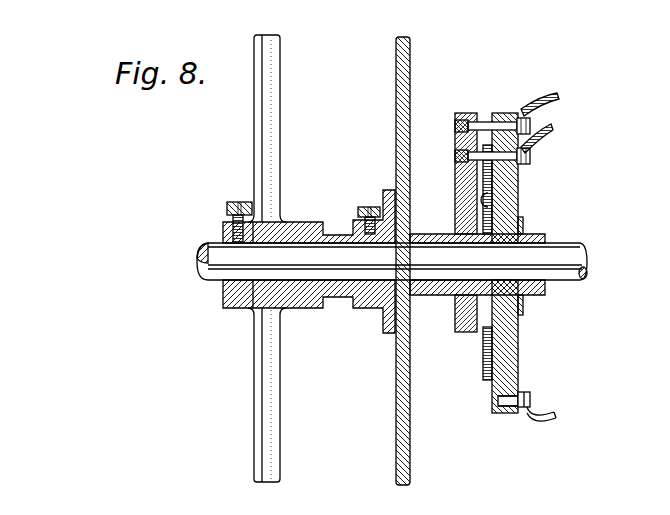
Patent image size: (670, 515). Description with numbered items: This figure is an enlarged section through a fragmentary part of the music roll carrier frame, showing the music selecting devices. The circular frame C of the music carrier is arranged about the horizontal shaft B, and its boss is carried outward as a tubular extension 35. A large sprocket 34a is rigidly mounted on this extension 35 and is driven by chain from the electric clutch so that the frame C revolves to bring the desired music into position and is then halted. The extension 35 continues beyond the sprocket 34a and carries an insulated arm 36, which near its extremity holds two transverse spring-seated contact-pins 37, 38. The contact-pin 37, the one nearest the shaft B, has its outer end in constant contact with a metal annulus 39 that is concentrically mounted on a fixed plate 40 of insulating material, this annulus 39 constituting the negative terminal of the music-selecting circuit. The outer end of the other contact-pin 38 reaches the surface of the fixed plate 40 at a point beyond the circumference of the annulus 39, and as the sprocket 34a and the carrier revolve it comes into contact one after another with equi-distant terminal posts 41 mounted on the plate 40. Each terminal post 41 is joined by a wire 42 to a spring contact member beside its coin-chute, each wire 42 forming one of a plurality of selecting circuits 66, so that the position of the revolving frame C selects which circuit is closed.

The shaft B is at (585, 282).
The circular frame C is at (279, 167).
The large sprocket 34a is at (396, 399).
The extension of the boss 35 is at (446, 229).
The insulated arm 36 is at (455, 196).
The contact-pin 37 is at (455, 156).
The contact-pin 38 is at (455, 125).
The metal annulus 39 is at (528, 178).
The fixed plate 40 is at (518, 347).
The terminal post 41 is at (518, 120).
The wire 42 is at (558, 96).
The selecting circuit 66 is at (552, 127).